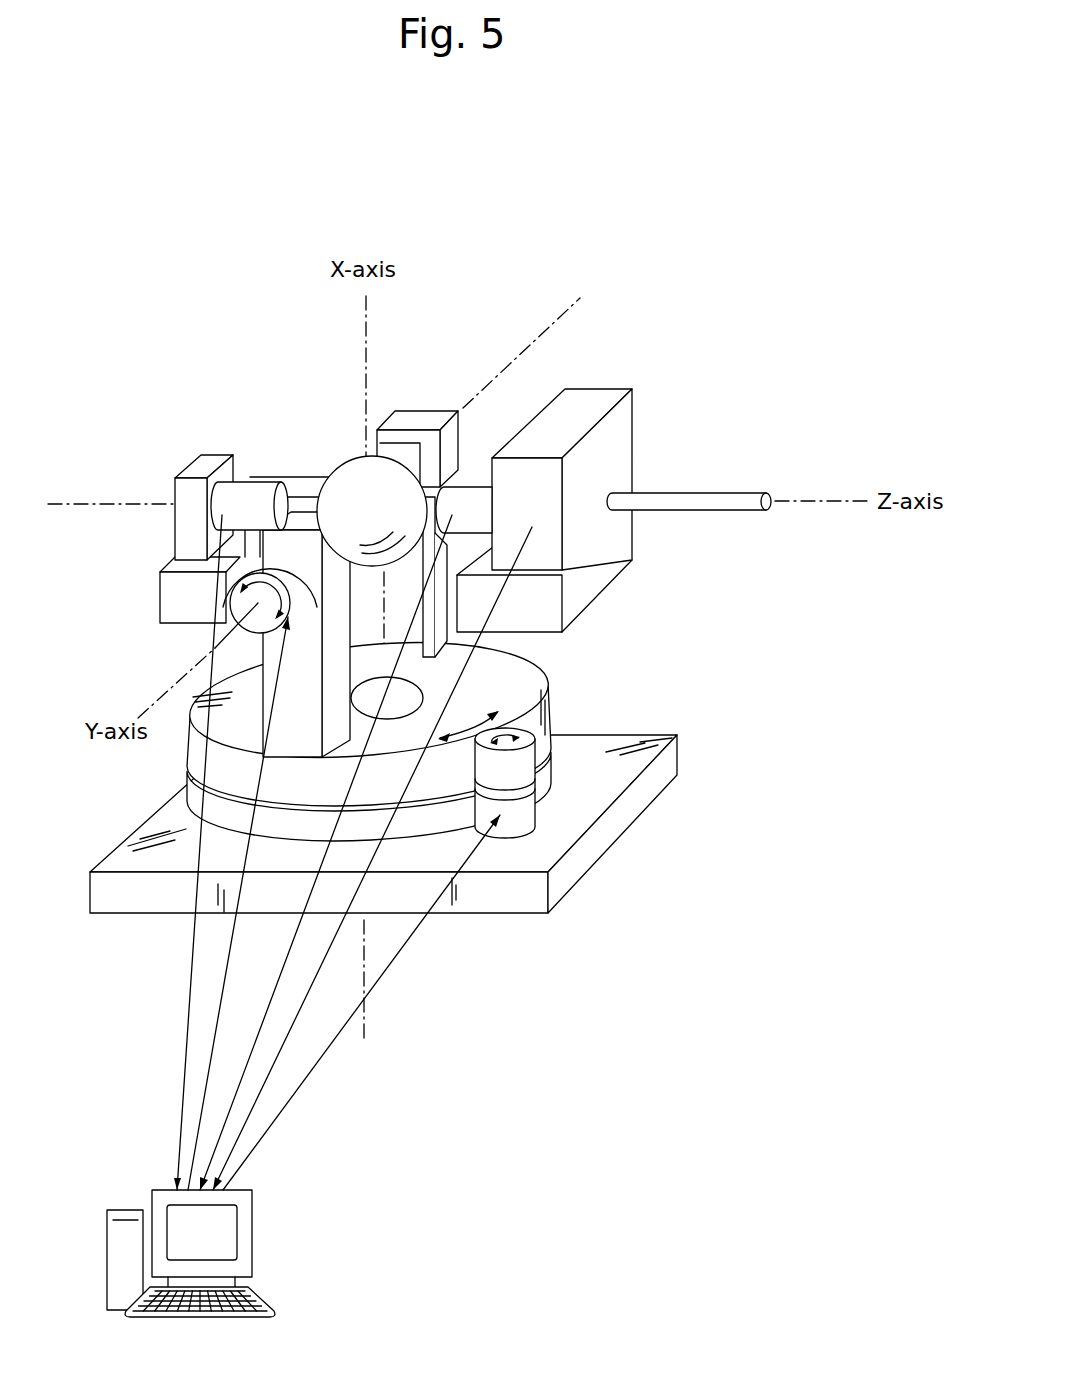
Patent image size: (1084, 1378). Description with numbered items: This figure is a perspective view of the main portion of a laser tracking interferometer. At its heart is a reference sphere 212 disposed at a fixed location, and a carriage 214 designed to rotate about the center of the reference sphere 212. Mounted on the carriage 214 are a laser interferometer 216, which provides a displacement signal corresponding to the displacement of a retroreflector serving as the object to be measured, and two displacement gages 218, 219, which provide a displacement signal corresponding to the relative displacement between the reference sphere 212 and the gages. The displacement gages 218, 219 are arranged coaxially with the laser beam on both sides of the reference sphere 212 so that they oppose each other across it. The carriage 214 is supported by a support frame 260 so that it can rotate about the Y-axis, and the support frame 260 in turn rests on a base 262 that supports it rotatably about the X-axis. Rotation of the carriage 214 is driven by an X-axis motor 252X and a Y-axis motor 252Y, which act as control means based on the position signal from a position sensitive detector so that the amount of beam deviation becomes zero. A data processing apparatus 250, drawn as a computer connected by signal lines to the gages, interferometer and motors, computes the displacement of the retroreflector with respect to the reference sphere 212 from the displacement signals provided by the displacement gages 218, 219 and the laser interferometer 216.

The reference sphere 212 is at (350, 463).
The carriage 214 is at (170, 600).
The laser interferometer 216 is at (624, 418).
The displacement gage 218 is at (473, 490).
The displacement gage 219 is at (252, 496).
The data processing apparatus 250 is at (270, 1302).
The X-axis motor 252X is at (530, 815).
The Y-axis motor 252Y is at (233, 613).
The support frame 260 is at (498, 660).
The base 262 is at (580, 760).